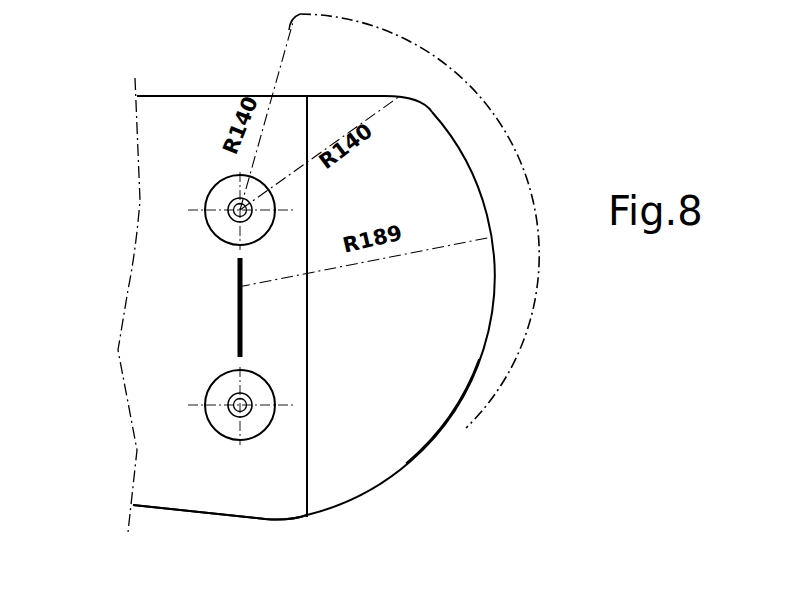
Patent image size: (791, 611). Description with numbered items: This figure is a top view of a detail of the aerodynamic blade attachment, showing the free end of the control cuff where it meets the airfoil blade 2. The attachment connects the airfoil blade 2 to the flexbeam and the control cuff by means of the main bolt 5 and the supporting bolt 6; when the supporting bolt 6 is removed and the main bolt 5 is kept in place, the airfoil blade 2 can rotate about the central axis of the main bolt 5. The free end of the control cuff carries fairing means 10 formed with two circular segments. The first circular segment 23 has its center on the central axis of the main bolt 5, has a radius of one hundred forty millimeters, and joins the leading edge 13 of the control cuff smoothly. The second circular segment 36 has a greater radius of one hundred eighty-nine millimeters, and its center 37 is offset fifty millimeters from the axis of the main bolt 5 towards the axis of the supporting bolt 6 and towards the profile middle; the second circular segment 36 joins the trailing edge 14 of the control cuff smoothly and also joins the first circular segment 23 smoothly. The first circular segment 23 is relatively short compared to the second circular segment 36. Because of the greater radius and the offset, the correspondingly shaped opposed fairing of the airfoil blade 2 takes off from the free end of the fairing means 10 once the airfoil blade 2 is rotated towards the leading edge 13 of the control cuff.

The airfoil blade 2 is at (453, 72).
The main bolt 5 is at (224, 421).
The supporting bolt 6 is at (228, 188).
The fairing means 10 is at (368, 452).
The leading edge 13 is at (203, 95).
The trailing edge 14 is at (237, 520).
The first circular segment 23 is at (407, 102).
The second circular segment 36 is at (430, 444).
The center of the second circular segment 37 is at (240, 286).